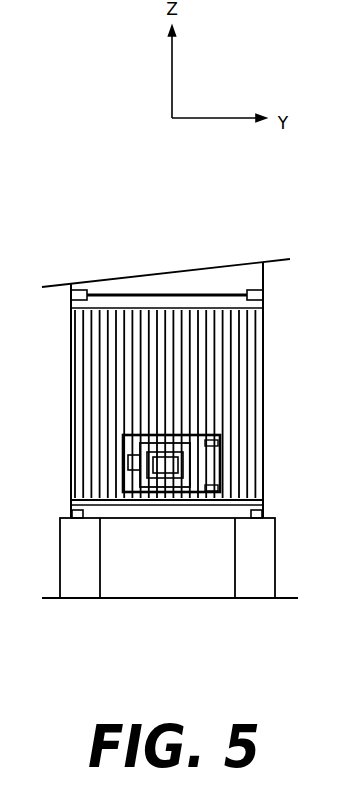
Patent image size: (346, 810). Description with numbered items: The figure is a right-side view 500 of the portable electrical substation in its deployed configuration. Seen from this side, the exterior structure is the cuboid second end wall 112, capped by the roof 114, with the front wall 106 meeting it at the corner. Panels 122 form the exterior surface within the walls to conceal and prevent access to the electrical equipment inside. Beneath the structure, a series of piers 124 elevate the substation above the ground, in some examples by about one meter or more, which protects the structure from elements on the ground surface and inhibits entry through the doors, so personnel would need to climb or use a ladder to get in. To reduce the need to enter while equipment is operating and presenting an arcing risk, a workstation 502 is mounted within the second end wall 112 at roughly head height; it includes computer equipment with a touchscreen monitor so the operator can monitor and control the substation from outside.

The front wall 106 is at (70, 403).
The second end wall 112 is at (233, 363).
The roof 114 is at (222, 268).
The panels 122 is at (117, 317).
The piers 124 is at (255, 588).
The right-side view 500 is at (296, 697).
The workstation 502 is at (158, 458).